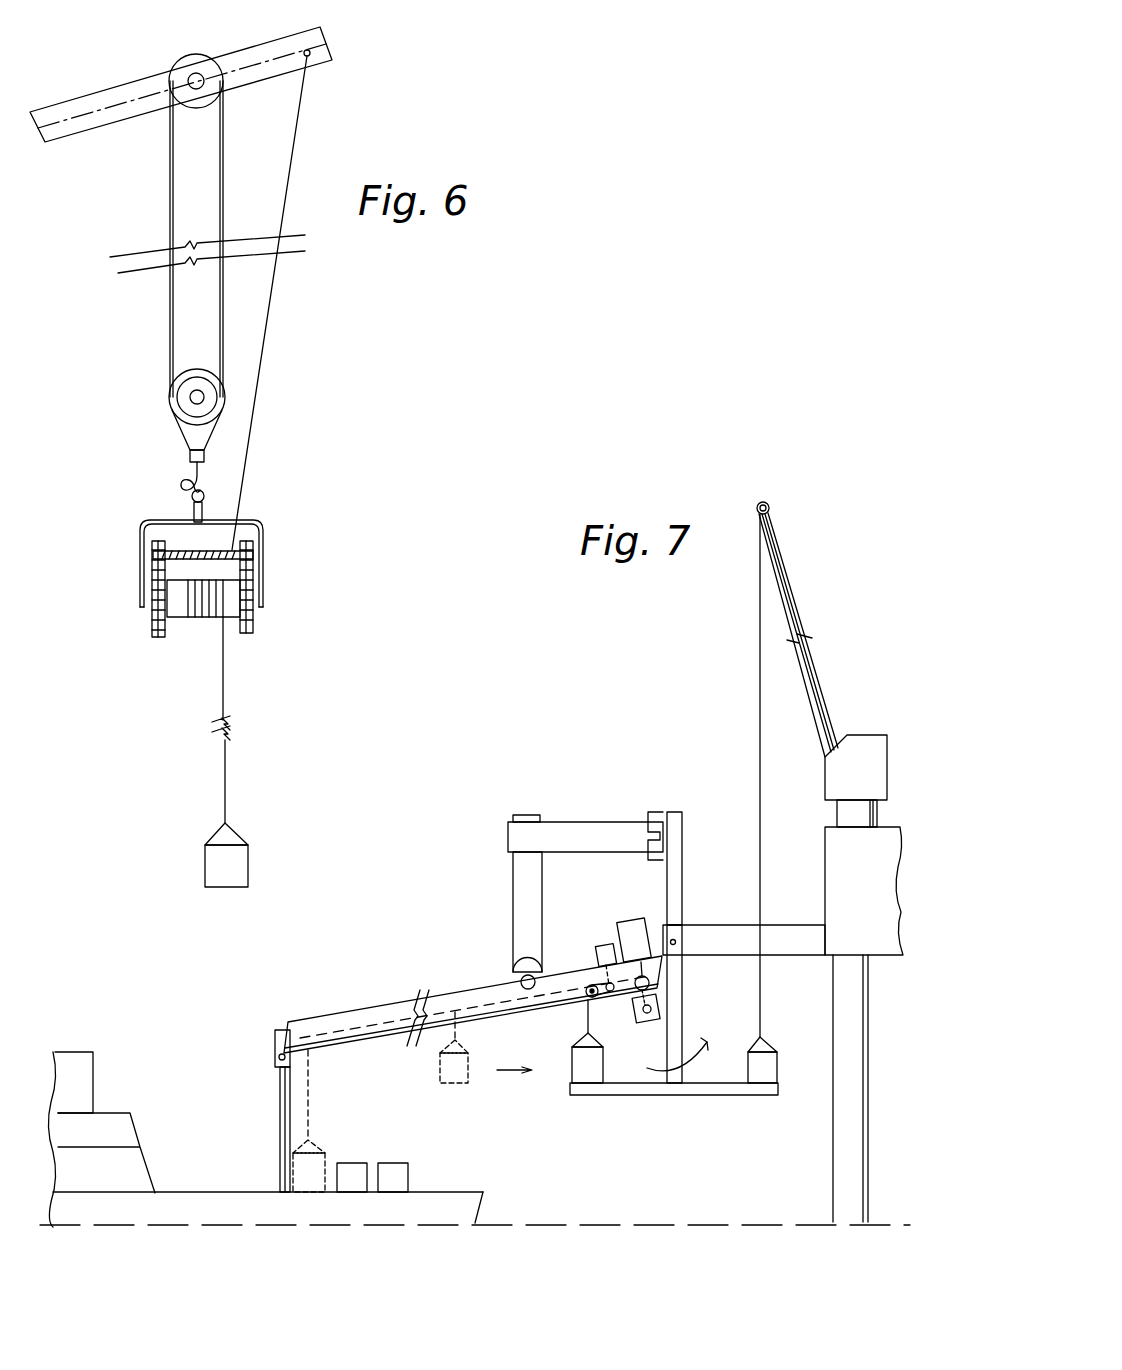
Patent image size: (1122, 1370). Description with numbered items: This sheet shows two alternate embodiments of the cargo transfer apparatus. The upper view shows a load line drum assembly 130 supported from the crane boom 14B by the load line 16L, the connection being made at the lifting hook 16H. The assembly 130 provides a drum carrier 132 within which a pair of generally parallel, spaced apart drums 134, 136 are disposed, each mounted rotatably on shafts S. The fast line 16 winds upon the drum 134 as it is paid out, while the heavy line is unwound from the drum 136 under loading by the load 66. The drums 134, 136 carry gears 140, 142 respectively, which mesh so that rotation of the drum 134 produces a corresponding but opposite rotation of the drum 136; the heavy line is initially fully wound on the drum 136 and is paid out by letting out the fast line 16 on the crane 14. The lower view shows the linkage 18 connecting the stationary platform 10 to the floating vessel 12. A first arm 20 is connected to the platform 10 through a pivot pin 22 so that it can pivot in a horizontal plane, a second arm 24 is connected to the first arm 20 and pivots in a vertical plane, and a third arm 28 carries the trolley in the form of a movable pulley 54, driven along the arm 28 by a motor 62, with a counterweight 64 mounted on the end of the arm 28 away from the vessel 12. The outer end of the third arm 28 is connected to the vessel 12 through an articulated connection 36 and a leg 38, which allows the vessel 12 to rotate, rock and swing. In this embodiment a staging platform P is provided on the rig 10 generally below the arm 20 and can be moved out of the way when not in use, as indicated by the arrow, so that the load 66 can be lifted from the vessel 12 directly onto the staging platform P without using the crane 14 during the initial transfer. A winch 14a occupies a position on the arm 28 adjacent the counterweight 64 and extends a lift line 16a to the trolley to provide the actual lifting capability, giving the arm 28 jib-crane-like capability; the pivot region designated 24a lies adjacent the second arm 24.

In FIG. 6, the crane boom 14B is at (128, 78).
In FIG. 6, the hoist line 16 is at (300, 116).
In FIG. 7, the hoist line 16 is at (758, 686).
In FIG. 6, the load line 16L is at (170, 194).
In FIG. 6, the lifting hook 16H is at (185, 478).
In FIG. 6, the drum 134 is at (176, 549).
In FIG. 6, the drum carrier 132 is at (140, 530).
In FIG. 6, the gear 140 is at (248, 534).
In FIG. 6, the load line drum assembly 130 is at (263, 546).
In FIG. 6, the shaft S is at (148, 598).
In FIG. 6, the gear 142 is at (253, 628).
In FIG. 6, the drum 136 is at (212, 733).
In FIG. 6, the load 66 is at (238, 868).
In FIG. 7, the load 66 is at (408, 1176).
In FIG. 7, the platform 10 is at (888, 826).
In FIG. 7, the crane 14 is at (860, 734).
In FIG. 7, the first arm 20 is at (594, 822).
In FIG. 7, the pivot pin 22 is at (677, 812).
In FIG. 7, the second arm 24 is at (680, 898).
In FIG. 7, the arm pivot 24a is at (684, 1011).
In FIG. 7, the staging platform P is at (648, 1098).
In FIG. 7, the third arm 28 is at (378, 1005).
In FIG. 7, the linkage 18 is at (481, 957).
In FIG. 7, the movable pulley 54 is at (314, 1030).
In FIG. 7, the articulated connection 36 is at (272, 1046).
In FIG. 7, the leg 38 is at (278, 1103).
In FIG. 7, the vessel 12 is at (212, 1192).
In FIG. 7, the lift line 16a is at (308, 1097).
In FIG. 7, the motor 62 is at (600, 946).
In FIG. 7, the counterweight 64 is at (628, 920).
In FIG. 7, the winch 14a is at (640, 1016).